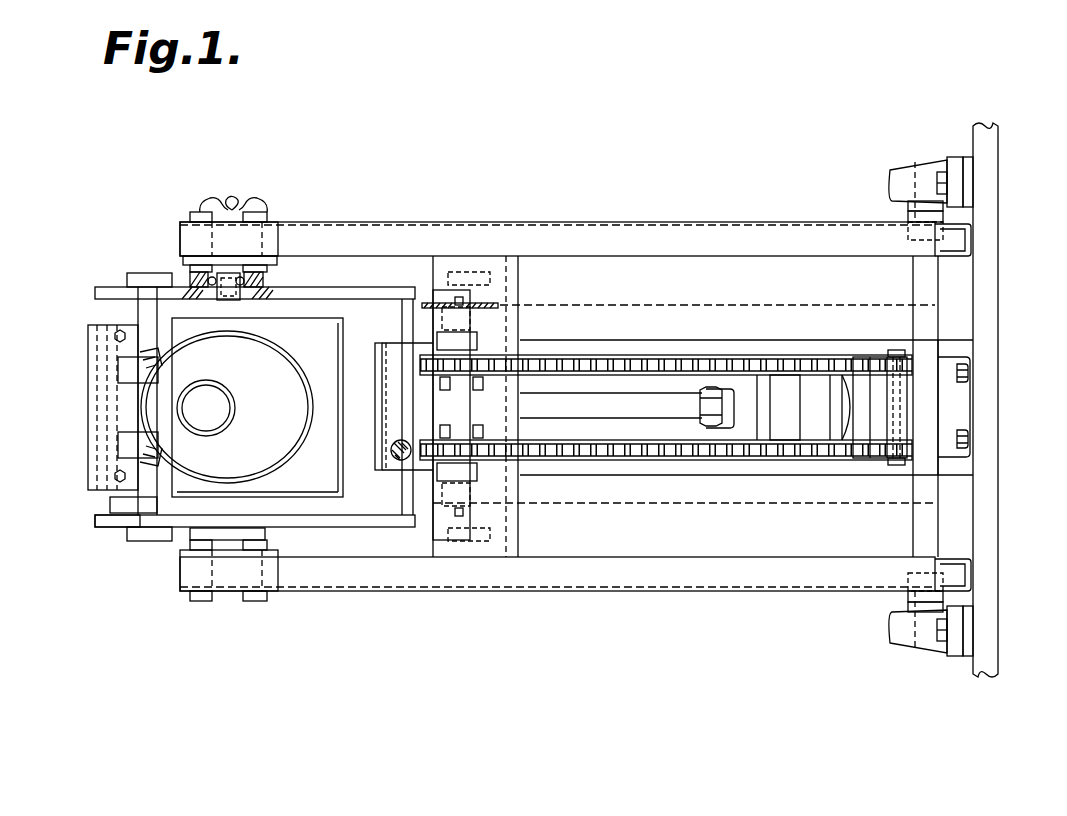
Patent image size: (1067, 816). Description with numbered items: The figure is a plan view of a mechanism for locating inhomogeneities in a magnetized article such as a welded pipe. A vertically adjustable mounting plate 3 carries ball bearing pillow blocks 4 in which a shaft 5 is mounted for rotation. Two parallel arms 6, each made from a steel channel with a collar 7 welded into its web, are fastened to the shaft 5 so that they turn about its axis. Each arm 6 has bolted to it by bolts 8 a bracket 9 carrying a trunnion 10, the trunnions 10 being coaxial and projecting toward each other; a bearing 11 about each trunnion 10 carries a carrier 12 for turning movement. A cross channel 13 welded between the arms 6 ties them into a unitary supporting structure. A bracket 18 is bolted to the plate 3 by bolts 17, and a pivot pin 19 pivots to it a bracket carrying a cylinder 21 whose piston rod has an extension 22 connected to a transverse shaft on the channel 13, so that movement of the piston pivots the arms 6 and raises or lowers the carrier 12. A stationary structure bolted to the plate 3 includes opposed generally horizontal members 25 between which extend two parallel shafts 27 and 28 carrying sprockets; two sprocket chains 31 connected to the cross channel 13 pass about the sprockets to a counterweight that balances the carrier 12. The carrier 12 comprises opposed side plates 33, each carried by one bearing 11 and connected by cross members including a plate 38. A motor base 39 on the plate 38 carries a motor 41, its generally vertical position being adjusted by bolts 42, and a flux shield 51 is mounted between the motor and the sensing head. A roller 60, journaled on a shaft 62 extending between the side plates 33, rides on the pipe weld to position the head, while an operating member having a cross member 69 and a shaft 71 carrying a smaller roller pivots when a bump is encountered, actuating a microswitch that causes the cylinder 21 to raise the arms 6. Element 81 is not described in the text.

The mounting plate 3 is at (1018, 405).
The ball bearing pillow blocks 4 is at (896, 170).
The shaft 5 is at (913, 283).
The arms 6 is at (628, 222).
The collar 7 is at (908, 213).
The bolts 8 is at (229, 225).
The bracket 9 is at (183, 260).
The trunnion 10 is at (232, 296).
The bearing 11 is at (258, 284).
The carrier 12 is at (178, 560).
The cross channel 13 is at (512, 548).
The bolts 17 is at (968, 372).
The bracket 18 is at (955, 345).
The pivot pin 19 is at (893, 352).
The cylinder 21 is at (780, 440).
The piston rod extension 22 is at (553, 405).
The horizontal members 25 is at (683, 312).
The shaft 27 is at (440, 406).
The shaft 28 is at (810, 400).
The sprocket chains 31 is at (608, 365).
The side plates 33 is at (340, 287).
The plate 38 is at (100, 518).
The motor base 39 is at (128, 500).
The motor 41 is at (192, 408).
The bolts 42 is at (115, 336).
The flux shield 51 is at (257, 407).
The roller 60 is at (178, 374).
The shaft 62 is at (162, 498).
The cross member 69 is at (404, 406).
The shaft 71 is at (402, 322).
The hydraulic line 81 is at (396, 460).